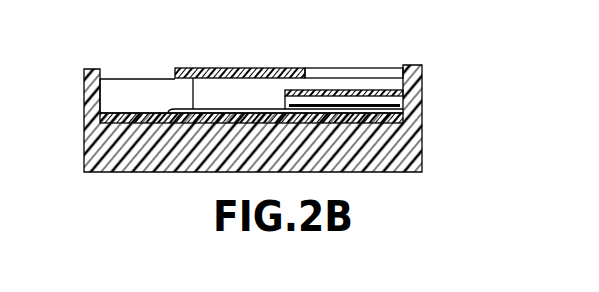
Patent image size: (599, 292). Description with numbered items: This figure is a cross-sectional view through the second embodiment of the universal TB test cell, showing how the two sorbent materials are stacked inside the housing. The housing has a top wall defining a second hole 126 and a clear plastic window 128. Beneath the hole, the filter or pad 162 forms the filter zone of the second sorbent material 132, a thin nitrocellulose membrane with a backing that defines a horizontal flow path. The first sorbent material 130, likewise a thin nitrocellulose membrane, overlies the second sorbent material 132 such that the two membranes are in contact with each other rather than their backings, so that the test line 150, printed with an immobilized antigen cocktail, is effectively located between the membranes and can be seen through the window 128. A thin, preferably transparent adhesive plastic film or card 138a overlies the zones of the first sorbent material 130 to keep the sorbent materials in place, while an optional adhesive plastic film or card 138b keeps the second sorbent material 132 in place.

The second hole 126 is at (174, 74).
The window 128 is at (348, 67).
The first sorbent material 130 is at (405, 105).
The second sorbent material 132 is at (405, 115).
The plastic film or card 138a is at (404, 92).
The plastic film or card 138b is at (407, 121).
The test line 150 is at (323, 95).
The filter or pad 162 is at (127, 88).